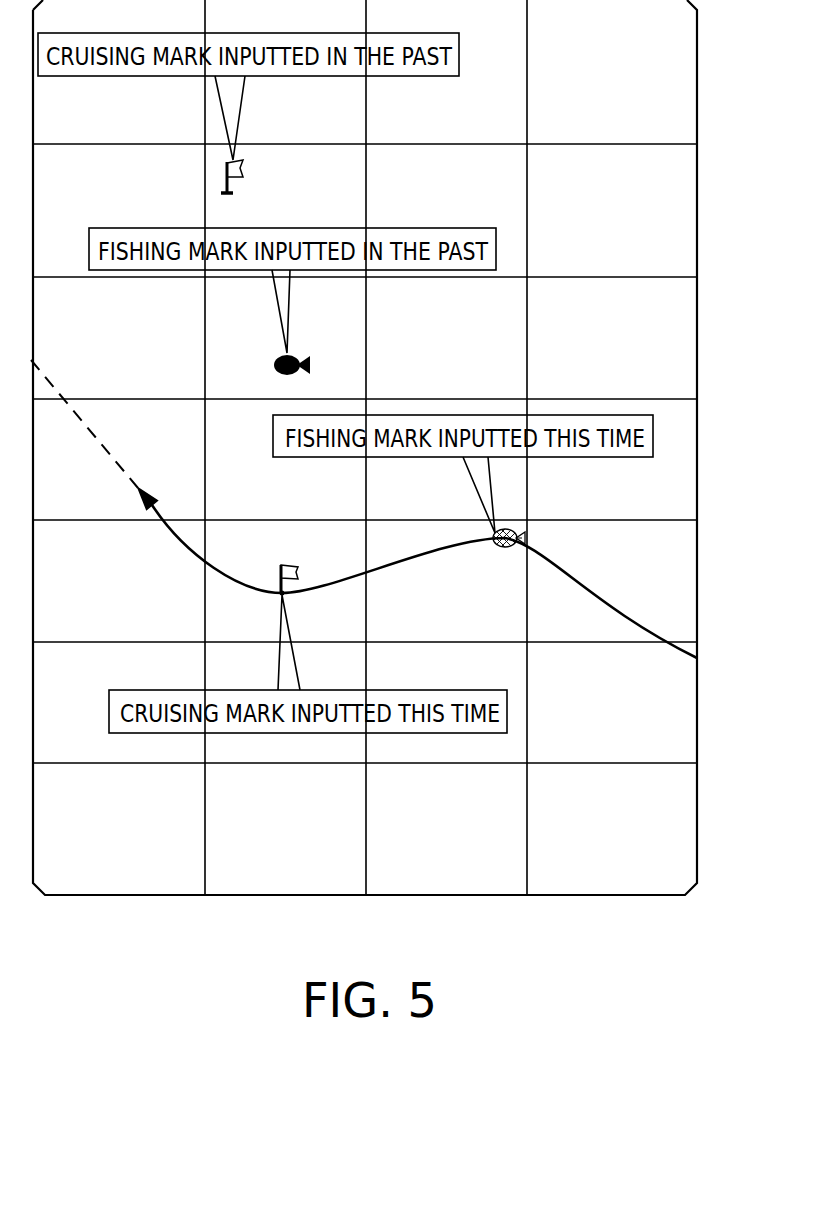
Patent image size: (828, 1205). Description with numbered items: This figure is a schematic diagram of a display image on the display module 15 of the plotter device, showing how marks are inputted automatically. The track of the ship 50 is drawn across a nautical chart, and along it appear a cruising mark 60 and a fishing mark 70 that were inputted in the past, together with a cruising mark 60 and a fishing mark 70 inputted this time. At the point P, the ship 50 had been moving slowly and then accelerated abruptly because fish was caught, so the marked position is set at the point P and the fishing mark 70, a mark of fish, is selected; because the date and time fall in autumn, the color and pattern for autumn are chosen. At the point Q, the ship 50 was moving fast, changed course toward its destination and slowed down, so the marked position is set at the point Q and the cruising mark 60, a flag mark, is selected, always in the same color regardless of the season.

The display module 15 is at (100, 880).
The ship 50 is at (147, 490).
The cruising mark 60 is at (243, 170).
The fishing mark 70 is at (310, 364).